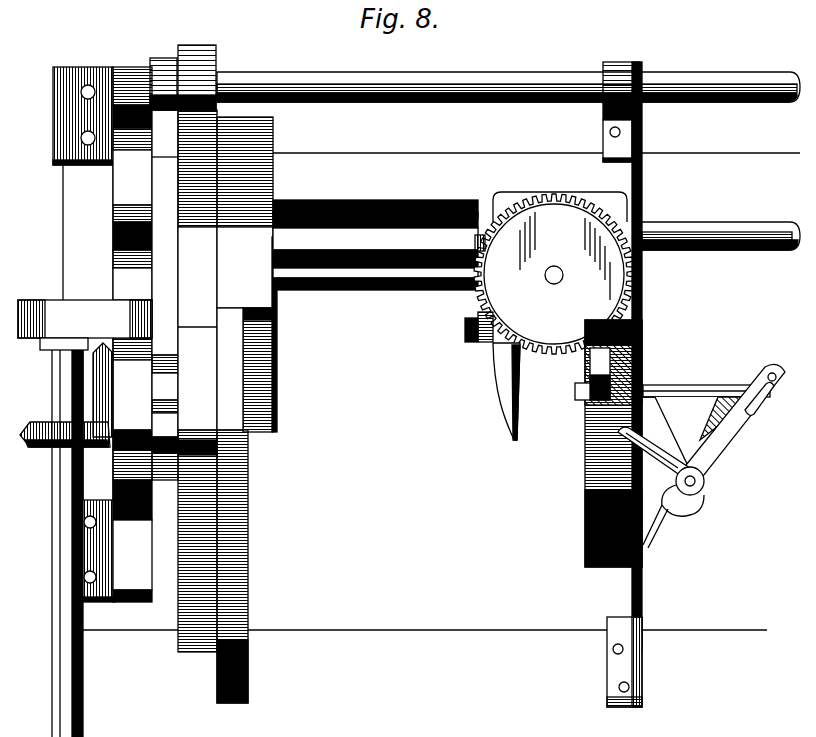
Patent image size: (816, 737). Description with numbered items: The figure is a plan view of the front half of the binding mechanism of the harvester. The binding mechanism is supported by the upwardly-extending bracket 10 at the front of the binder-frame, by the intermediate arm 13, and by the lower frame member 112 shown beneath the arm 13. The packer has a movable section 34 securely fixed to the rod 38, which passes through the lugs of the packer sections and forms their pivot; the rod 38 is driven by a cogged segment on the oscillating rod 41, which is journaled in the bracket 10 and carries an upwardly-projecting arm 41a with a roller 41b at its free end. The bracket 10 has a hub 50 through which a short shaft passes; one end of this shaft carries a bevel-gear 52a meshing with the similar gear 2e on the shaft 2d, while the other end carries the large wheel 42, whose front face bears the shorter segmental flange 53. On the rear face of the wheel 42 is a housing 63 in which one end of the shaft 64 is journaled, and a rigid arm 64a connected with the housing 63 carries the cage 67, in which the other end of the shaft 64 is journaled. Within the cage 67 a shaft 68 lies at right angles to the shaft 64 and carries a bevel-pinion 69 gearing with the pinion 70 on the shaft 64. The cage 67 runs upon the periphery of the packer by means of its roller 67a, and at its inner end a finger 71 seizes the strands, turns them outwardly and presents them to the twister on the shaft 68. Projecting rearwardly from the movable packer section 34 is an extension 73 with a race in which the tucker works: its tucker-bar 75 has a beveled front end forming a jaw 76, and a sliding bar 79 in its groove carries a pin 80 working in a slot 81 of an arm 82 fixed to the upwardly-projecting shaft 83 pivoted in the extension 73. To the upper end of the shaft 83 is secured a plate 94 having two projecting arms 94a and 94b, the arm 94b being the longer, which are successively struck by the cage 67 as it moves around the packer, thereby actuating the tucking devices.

The bracket 10 is at (113, 198).
The oscillating rod 41 is at (508, 97).
The upwardly-projecting arm 41a is at (166, 58).
The roller 41b is at (208, 70).
The large wheel 42 is at (425, 410).
The hub 50 is at (145, 334).
The bevel-gear 52a is at (92, 415).
The gear 2e is at (17, 465).
The shaft 2d is at (50, 455).
The segmental flange 53 is at (197, 381).
The housing 63 is at (273, 199).
The shaft 64 is at (315, 290).
The rigid arm 64a is at (375, 225).
The cage 67 is at (554, 264).
The roller 67a is at (590, 370).
The shaft 68 is at (550, 267).
The bevel-pinion 69 is at (517, 305).
The pinion 70 is at (466, 322).
The finger 71 is at (498, 391).
The arm 13 is at (633, 356).
The rod 38 is at (721, 225).
The packer section 34 is at (597, 443).
The jaw 76 is at (578, 400).
The tucker-bar 75 is at (683, 385).
The sliding bar 79 is at (727, 385).
The arm 82 is at (735, 428).
The extension 73 is at (733, 422).
The pin 80 is at (775, 385).
The slot 81 is at (758, 410).
The plate 94 is at (704, 493).
The arm 94a is at (622, 435).
The arm 94b is at (663, 398).
The shaft 83 is at (688, 490).
The bar 112 is at (643, 612).